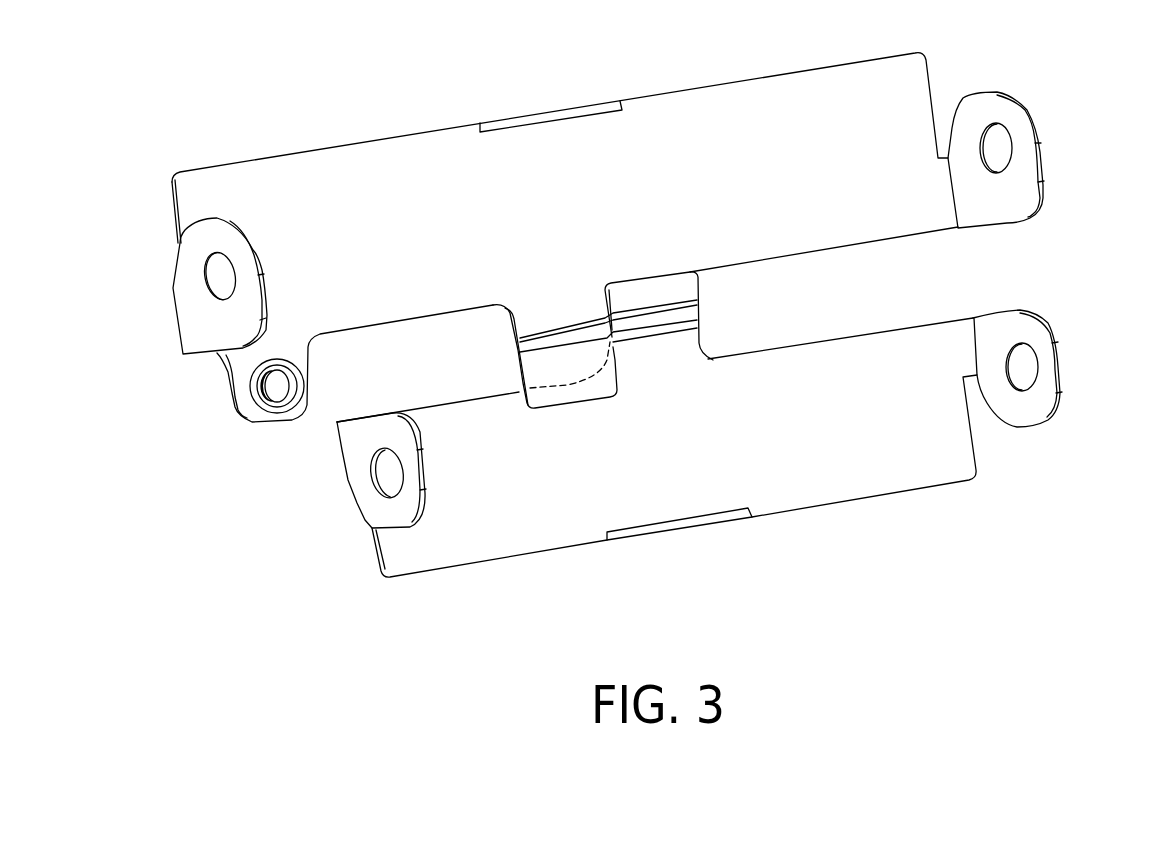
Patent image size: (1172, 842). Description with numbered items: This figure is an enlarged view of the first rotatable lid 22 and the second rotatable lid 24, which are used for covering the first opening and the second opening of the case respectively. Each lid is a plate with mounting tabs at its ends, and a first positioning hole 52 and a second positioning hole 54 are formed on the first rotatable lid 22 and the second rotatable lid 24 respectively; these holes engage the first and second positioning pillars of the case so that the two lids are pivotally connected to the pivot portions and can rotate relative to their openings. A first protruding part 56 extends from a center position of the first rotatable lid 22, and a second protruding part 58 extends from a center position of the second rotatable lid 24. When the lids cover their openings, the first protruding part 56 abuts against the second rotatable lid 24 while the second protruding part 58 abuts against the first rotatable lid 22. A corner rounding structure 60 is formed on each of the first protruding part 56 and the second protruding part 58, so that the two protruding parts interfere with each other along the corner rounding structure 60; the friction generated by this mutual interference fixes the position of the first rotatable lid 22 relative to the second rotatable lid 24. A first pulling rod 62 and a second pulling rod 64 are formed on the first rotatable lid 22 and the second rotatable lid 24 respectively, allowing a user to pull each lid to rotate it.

The first rotatable lid 22 is at (832, 485).
The second rotatable lid 24 is at (742, 113).
The first positioning hole 52 is at (1025, 372).
The second positioning hole 54 is at (998, 147).
The first protruding part 56 is at (652, 288).
The second protruding part 58 is at (572, 395).
The corner rounding structure 60 is at (605, 312).
The first pulling rod 62 is at (733, 513).
The second pulling rod 64 is at (545, 117).